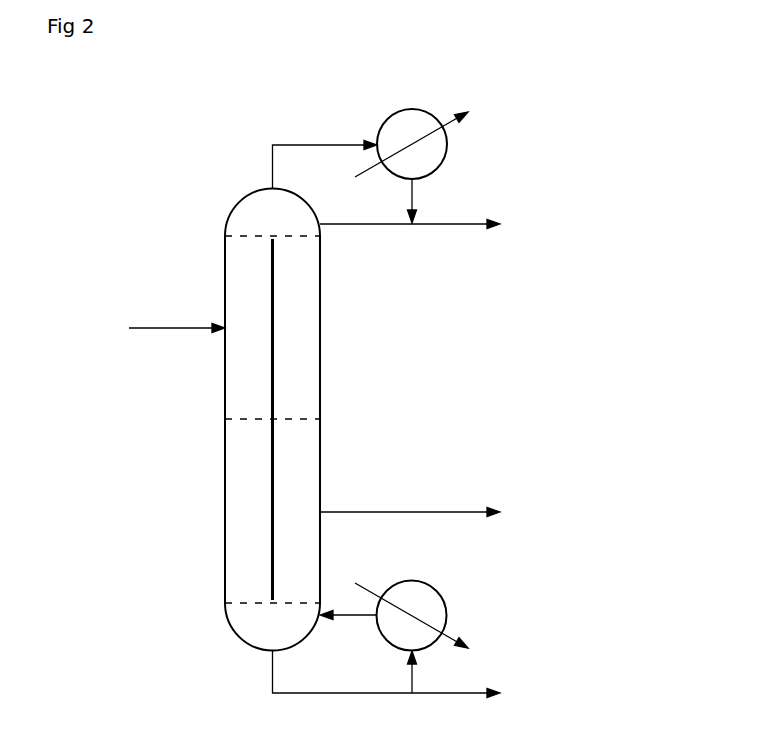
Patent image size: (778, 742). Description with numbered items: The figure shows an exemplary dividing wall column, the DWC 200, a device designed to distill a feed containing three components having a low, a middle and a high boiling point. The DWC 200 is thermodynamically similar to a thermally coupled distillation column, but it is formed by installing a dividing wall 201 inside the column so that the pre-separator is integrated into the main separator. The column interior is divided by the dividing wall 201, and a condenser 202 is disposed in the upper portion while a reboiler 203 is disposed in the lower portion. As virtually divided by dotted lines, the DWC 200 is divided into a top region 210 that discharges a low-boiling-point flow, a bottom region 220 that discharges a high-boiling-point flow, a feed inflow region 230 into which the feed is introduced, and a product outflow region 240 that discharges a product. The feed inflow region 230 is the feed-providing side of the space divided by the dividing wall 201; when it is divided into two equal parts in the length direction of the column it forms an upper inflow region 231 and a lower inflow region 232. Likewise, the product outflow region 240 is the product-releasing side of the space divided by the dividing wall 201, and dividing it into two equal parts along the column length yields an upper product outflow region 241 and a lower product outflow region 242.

The DWC 200 is at (190, 157).
The dividing wall 201 is at (288, 286).
The condenser 202 is at (448, 143).
The reboiler 203 is at (447, 612).
The top region 210 is at (251, 208).
The bottom region 220 is at (255, 628).
The feed inflow region 230 is at (120, 292).
The upper inflow region 231 is at (245, 289).
The lower inflow region 232 is at (245, 514).
The product outflow region 240 is at (427, 352).
The upper product outflow region 241 is at (302, 357).
The lower product outflow region 242 is at (300, 483).